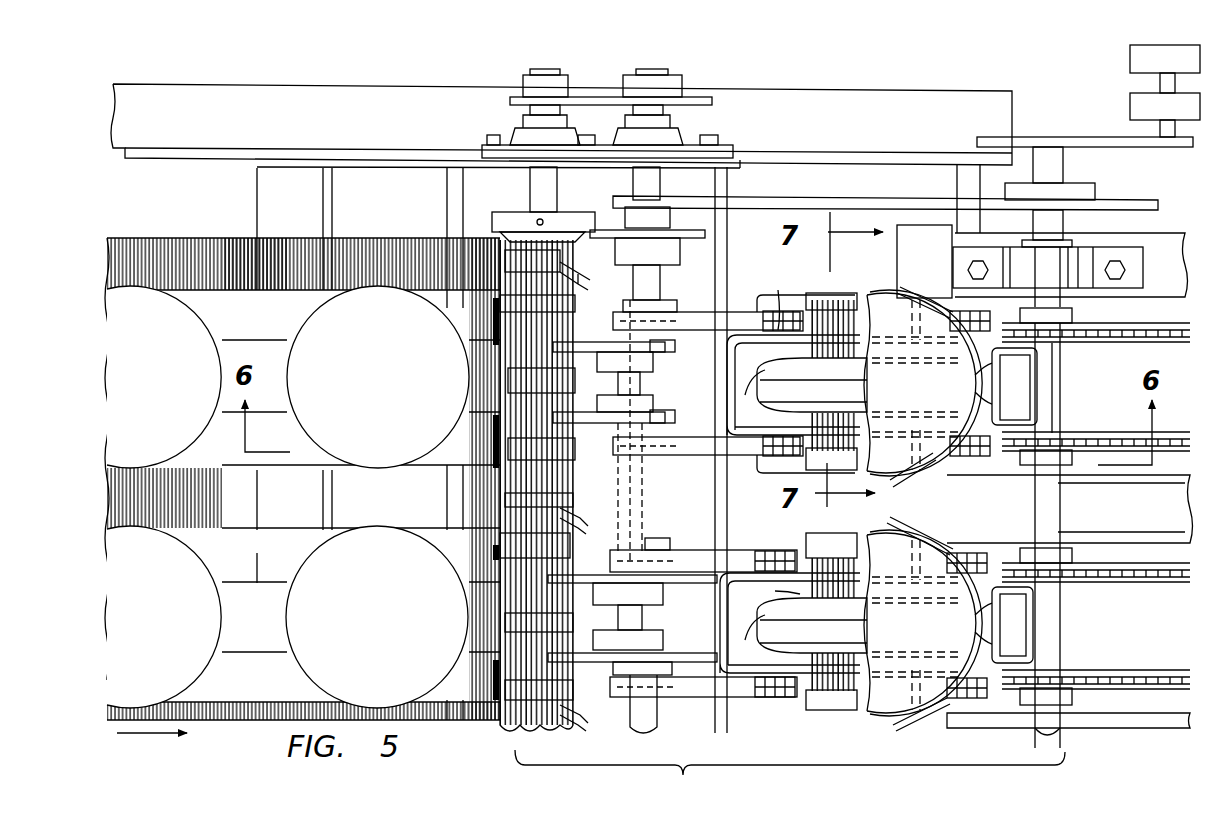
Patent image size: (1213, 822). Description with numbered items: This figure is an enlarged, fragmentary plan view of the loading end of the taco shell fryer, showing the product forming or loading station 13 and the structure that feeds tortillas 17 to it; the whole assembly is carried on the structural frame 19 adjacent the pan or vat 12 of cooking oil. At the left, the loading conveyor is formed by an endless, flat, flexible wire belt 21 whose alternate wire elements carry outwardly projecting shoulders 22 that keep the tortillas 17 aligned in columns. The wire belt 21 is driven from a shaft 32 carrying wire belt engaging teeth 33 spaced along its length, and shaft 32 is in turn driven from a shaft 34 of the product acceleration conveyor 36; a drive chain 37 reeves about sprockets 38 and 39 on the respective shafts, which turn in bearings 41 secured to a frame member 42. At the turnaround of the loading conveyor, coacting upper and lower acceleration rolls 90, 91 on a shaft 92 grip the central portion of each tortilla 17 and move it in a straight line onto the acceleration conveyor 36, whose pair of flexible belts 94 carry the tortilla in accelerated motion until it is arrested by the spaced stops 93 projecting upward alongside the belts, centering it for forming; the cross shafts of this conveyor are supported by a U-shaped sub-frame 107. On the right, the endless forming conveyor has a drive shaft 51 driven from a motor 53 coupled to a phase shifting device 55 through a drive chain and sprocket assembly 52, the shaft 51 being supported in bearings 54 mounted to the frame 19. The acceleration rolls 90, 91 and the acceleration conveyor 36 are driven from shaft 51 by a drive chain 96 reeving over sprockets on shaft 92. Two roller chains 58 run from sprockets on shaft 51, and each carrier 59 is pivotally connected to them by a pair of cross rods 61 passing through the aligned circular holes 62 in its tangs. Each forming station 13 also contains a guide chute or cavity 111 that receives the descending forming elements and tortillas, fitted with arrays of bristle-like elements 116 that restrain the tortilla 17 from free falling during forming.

The pan or vat 12 is at (728, 721).
The product forming or loading station 13 is at (790, 774).
The tortilla 17 is at (143, 400).
The structural frame 19 is at (1168, 232).
The wire belt 21 is at (172, 247).
The shoulder 22 is at (578, 283).
The shaft 32 is at (530, 186).
The wire belt engaging teeth 33 is at (575, 307).
The shaft 34 is at (660, 186).
The product acceleration conveyor 36 is at (733, 310).
The drive chain 37 is at (600, 97).
The sprocket 38 is at (520, 93).
The sprocket 39 is at (690, 100).
The bearing 41 is at (590, 131).
The frame member 42 is at (396, 124).
The drive shaft 51 is at (1063, 168).
The drive chain and sprocket assembly 52 is at (1130, 135).
The motor 53 is at (1176, 69).
The bearings 54 is at (1100, 262).
The phase shifting device 55 is at (1176, 116).
The roller chain 58 is at (1135, 345).
The carrier 59 is at (1025, 420).
The cross rod 61 is at (1035, 385).
The circular hole 62 is at (841, 393).
The upper acceleration roll 90 is at (672, 350).
The lower acceleration roll 91 is at (580, 402).
The shaft 92 is at (640, 385).
The stop 93 is at (905, 293).
The acceleration conveyor belt 94 is at (685, 545).
The drive chain 96 is at (830, 198).
The U-shaped sub-frame 107 is at (772, 505).
The guide chute or cavity 111 is at (778, 330).
The bristle-like elements 116 is at (768, 589).